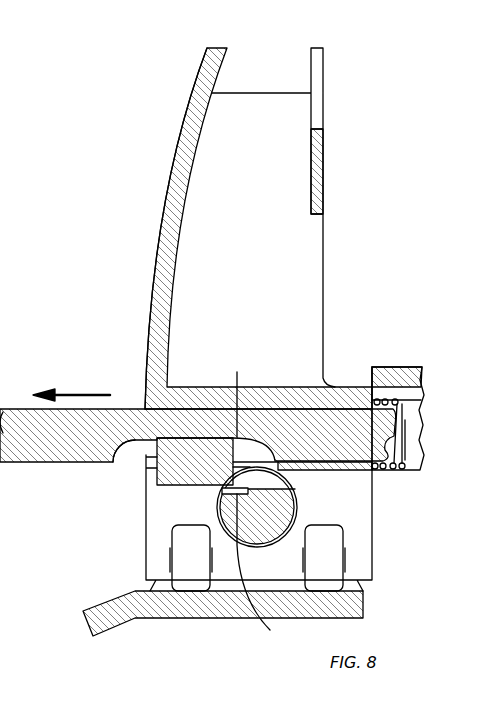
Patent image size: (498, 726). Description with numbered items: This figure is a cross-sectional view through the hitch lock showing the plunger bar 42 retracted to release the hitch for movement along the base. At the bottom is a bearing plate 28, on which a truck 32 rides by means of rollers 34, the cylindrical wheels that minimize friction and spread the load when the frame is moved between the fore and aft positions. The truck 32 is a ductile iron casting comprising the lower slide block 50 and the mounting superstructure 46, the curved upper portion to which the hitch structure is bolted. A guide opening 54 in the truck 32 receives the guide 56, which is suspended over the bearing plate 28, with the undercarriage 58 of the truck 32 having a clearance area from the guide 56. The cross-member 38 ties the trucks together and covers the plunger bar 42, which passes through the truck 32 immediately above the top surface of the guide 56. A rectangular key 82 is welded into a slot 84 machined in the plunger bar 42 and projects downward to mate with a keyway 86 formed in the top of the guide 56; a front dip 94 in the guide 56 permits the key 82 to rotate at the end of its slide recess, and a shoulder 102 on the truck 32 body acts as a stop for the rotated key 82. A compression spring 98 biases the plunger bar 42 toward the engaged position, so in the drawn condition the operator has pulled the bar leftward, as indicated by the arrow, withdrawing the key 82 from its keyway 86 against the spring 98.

The bearing plate 28 is at (188, 618).
The truck 32 is at (148, 250).
The rollers 34 is at (185, 556).
The cross-member 38 is at (405, 365).
The plunger bar 42 is at (122, 408).
The mounting superstructure 46 is at (172, 168).
The lower slide block 50 is at (150, 522).
The guide opening 54 is at (297, 500).
The guide 56 is at (297, 518).
The undercarriage 58 is at (337, 470).
The key 82 is at (157, 488).
The slot 84 is at (138, 452).
The keyway 86 is at (268, 480).
The front dip 94 is at (264, 570).
The compression spring 98 is at (397, 400).
The shoulder 102 is at (235, 392).